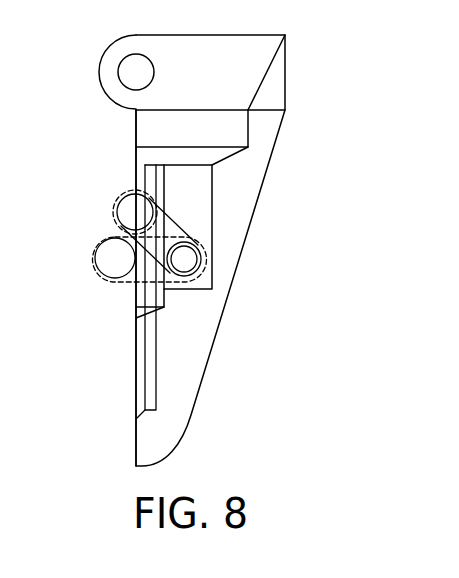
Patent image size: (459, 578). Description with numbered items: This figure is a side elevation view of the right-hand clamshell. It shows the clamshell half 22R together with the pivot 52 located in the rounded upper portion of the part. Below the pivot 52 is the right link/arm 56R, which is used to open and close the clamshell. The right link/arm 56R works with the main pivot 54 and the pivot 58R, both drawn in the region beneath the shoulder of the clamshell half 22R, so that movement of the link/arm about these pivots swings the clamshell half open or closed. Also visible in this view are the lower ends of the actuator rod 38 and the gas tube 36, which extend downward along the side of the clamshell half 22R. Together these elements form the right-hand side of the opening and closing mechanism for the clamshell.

The clamshell half 22R is at (301, 85).
The pivot 52 is at (136, 72).
The main pivot 54 is at (128, 210).
The right link/arm 56R is at (188, 212).
The pivot 58R is at (184, 259).
The actuator rod 38 is at (139, 358).
The gas tube 36 is at (152, 363).